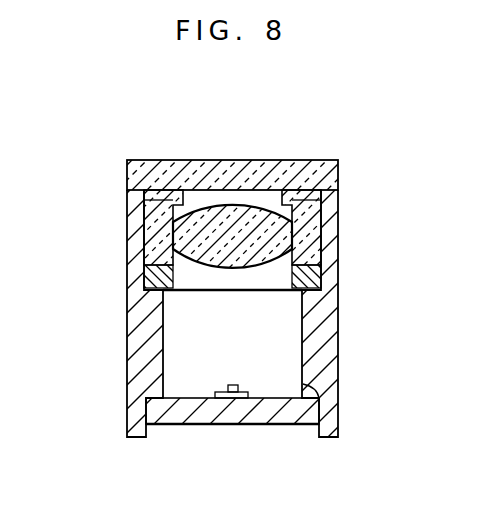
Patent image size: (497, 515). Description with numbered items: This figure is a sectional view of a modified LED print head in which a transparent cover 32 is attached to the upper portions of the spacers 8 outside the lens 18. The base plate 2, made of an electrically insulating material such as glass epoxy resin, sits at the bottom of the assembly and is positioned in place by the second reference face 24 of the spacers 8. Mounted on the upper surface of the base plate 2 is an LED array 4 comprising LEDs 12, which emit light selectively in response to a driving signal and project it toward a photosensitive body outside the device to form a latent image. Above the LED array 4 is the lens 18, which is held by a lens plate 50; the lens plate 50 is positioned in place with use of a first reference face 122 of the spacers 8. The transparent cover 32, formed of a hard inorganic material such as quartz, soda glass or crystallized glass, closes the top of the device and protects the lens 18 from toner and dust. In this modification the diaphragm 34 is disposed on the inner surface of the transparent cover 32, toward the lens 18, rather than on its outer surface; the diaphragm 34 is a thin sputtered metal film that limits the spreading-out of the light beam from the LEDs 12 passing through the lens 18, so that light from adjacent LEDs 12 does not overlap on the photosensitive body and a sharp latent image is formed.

The base plate 2 is at (233, 412).
The LED array 4 is at (247, 392).
The spacer 8 is at (140, 333).
The LED 12 is at (232, 385).
The lens 18 is at (237, 218).
The second reference face 24 is at (332, 378).
The transparent cover 32 is at (223, 170).
The diaphragm 34 is at (297, 195).
The lens plate 50 is at (308, 282).
The first reference face 122 is at (316, 296).